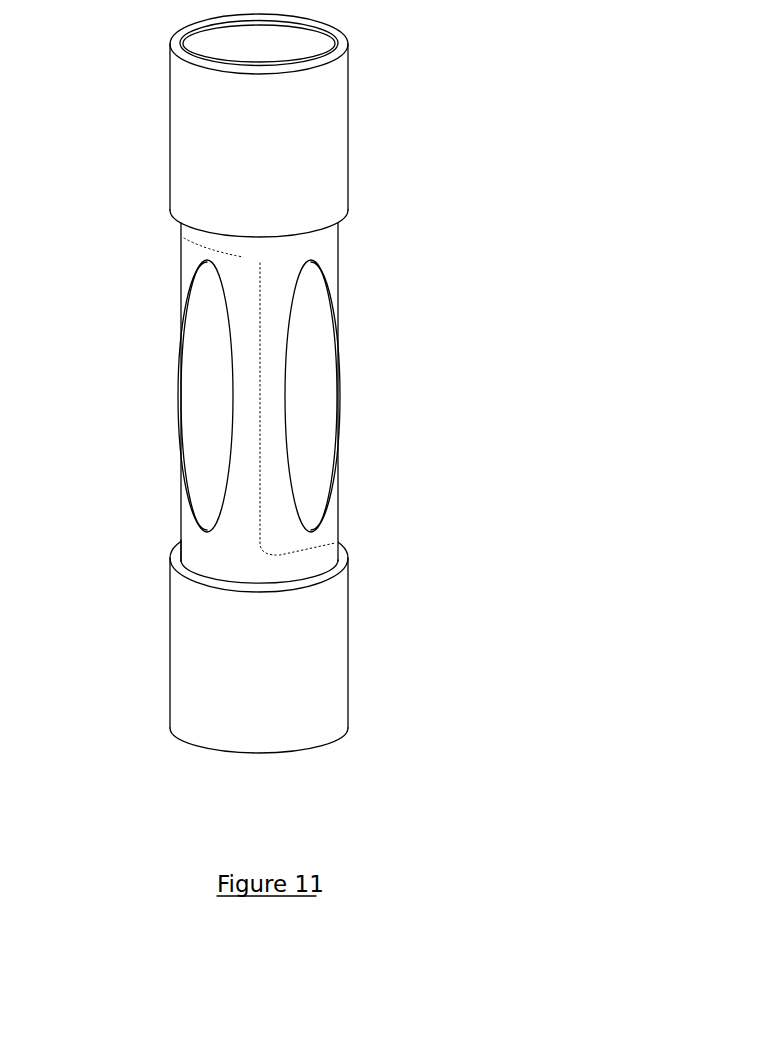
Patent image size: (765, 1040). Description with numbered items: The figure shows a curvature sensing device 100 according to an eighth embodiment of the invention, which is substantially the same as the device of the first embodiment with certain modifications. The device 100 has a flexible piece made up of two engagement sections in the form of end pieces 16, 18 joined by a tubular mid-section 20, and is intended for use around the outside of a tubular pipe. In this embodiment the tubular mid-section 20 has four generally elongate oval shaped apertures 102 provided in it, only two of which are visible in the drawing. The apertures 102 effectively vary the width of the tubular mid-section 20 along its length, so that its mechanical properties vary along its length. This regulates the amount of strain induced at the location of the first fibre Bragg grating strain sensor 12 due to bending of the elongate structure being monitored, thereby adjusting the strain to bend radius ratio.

The curvature sensing device 100 is at (393, 235).
The first fibre Bragg grating strain sensor 12 is at (263, 396).
The end piece 16 is at (327, 662).
The end piece 18 is at (330, 103).
The tubular mid-section 20 is at (197, 543).
The elongate oval shaped aperture 102 is at (205, 410).